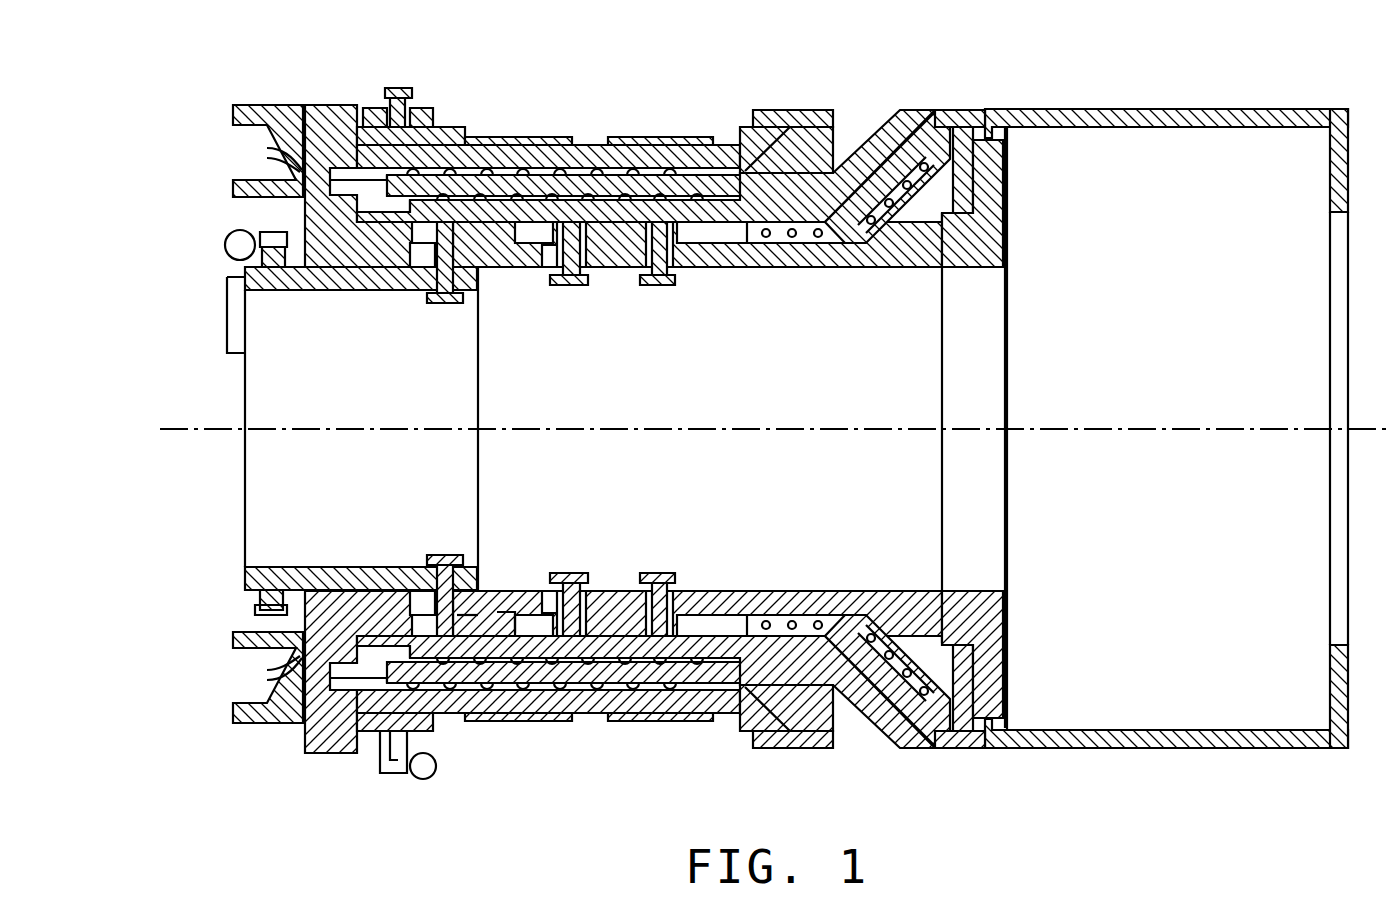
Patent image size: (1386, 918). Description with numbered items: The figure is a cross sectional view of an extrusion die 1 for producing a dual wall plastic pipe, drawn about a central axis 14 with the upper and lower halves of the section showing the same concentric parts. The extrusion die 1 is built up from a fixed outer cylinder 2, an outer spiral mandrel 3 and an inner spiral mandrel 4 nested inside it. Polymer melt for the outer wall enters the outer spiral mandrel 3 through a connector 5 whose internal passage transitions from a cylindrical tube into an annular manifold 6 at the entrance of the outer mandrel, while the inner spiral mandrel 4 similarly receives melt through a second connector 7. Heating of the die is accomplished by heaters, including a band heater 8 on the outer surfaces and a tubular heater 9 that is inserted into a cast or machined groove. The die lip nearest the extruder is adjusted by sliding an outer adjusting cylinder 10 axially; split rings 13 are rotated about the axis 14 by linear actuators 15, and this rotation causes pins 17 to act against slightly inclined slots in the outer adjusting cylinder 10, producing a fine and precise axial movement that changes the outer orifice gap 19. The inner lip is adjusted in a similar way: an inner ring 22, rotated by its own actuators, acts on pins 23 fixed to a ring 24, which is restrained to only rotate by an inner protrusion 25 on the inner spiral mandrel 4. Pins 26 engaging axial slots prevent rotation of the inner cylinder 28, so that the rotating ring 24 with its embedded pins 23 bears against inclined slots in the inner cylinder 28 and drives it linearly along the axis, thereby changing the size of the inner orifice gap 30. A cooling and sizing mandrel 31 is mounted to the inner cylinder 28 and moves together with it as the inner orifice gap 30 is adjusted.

The extrusion die 1 is at (664, 74).
The fixed outer cylinder 2 is at (549, 146).
The outer spiral mandrel 3 is at (687, 183).
The inner spiral mandrel 4 is at (815, 173).
The connector 5 is at (276, 105).
The annular manifold 6 is at (352, 168).
The connector 7 is at (262, 723).
The band heater 8 is at (527, 136).
The tubular heater 9 is at (925, 198).
The outer adjusting cylinder 10 is at (758, 110).
The split rings 13 is at (375, 725).
The axis 14 is at (184, 431).
The linear actuators 15 is at (437, 768).
The pins 17 is at (404, 88).
The orifice gap 19 is at (796, 110).
The inner ring 22 is at (310, 290).
The pins 23 is at (445, 304).
The ring 24 is at (466, 618).
The inner protrusion 25 is at (503, 625).
The pins 26 is at (565, 286).
The inner cylinder 28 is at (850, 264).
The orifice gap 30 is at (935, 110).
The cooling and sizing mandrel 31 is at (1239, 109).